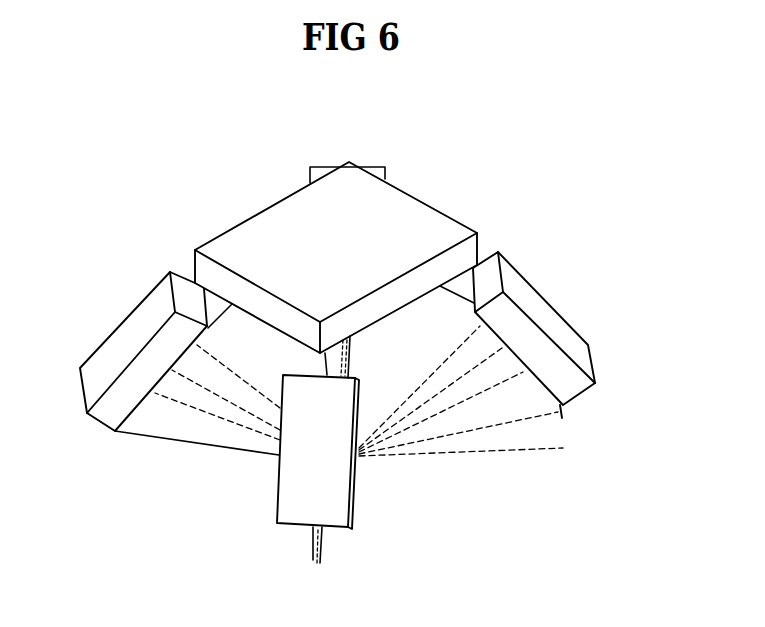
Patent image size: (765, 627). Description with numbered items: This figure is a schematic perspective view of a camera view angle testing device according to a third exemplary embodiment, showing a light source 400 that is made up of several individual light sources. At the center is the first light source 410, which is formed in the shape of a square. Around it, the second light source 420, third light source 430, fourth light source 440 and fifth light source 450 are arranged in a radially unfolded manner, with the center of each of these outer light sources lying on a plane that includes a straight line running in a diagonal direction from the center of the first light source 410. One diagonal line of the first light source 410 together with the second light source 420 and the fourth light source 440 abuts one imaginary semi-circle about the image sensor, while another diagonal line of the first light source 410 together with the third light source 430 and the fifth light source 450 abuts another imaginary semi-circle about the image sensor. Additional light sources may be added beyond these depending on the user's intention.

The light source 400 is at (505, 180).
The first light source 410 is at (296, 227).
The second light source 420 is at (135, 330).
The third light source 430 is at (288, 493).
The fourth light source 440 is at (545, 312).
The fifth light source 450 is at (323, 166).